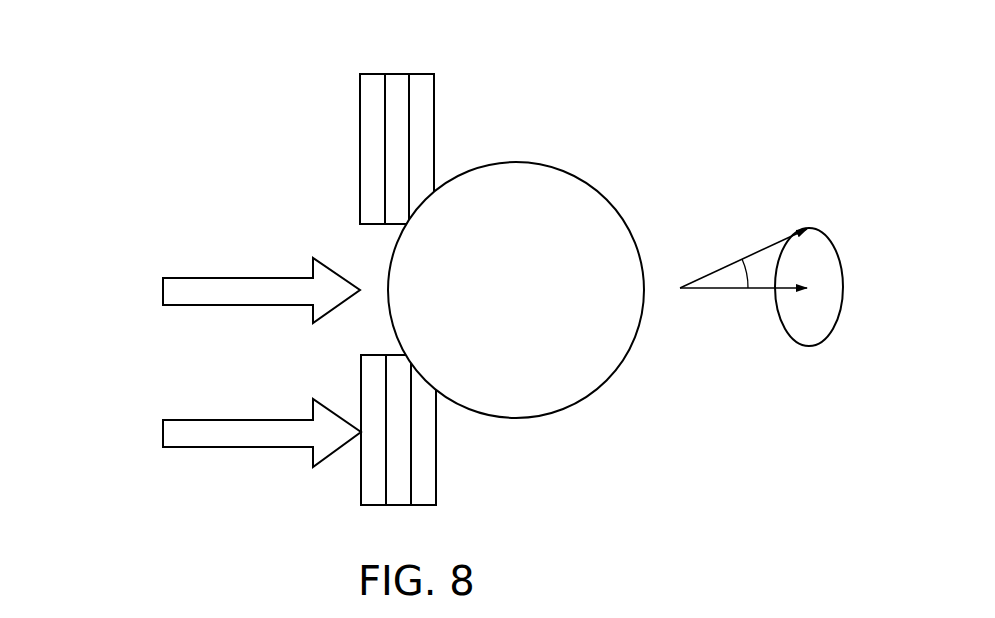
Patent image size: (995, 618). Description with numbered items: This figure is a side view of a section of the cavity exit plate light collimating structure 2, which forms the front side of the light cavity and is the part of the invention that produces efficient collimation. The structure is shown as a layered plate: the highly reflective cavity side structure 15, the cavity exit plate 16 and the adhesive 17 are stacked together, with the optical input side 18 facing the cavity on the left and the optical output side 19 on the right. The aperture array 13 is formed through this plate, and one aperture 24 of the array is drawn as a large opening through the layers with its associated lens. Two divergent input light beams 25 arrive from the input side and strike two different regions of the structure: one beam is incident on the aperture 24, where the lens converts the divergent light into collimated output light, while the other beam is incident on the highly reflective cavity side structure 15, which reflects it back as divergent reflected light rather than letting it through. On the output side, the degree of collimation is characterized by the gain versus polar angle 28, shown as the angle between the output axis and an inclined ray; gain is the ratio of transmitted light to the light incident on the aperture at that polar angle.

The cavity exit plate light collimating structure 2 is at (540, 66).
The aperture array 13 is at (352, 252).
The highly reflective cavity side structure 15 is at (372, 110).
The cavity exit plate 16 is at (397, 83).
The adhesive 17 is at (420, 97).
The optical input side 18 is at (210, 496).
The optical output side 19 is at (622, 491).
The aperture 24 is at (585, 178).
The divergent input light beams 25 is at (238, 418).
The polar angle θ 28 is at (757, 255).